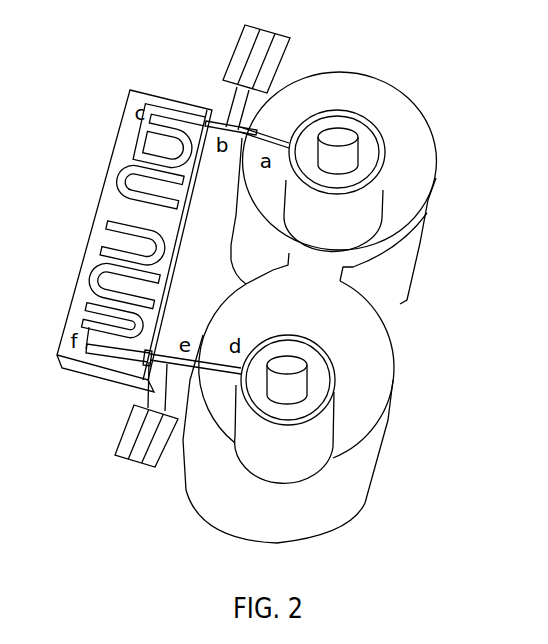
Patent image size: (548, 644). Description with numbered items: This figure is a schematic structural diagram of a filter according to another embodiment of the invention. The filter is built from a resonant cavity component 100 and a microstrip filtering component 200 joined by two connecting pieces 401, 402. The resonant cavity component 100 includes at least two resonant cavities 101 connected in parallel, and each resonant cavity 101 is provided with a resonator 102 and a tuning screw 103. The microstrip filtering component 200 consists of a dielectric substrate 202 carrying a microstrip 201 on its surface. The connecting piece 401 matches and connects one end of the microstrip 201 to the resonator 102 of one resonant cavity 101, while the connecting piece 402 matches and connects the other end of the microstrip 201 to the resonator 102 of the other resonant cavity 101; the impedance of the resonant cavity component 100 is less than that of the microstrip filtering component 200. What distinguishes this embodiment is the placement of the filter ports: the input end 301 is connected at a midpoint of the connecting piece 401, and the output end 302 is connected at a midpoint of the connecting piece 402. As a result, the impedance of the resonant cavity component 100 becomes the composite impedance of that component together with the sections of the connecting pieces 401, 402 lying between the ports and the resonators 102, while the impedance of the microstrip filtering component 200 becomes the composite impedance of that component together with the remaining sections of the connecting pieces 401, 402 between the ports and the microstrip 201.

The resonant cavity component 100 is at (365, 463).
The resonant cavity 101 is at (420, 117).
The resonator 102 is at (328, 193).
The tuning screw 103 is at (285, 375).
The microstrip filtering component 200 is at (115, 142).
The microstrip 201 is at (165, 243).
The dielectric substrate 202 is at (168, 302).
The input end 301 is at (243, 58).
The output end 302 is at (134, 460).
The connecting piece 401 is at (237, 141).
The connecting piece 402 is at (165, 352).